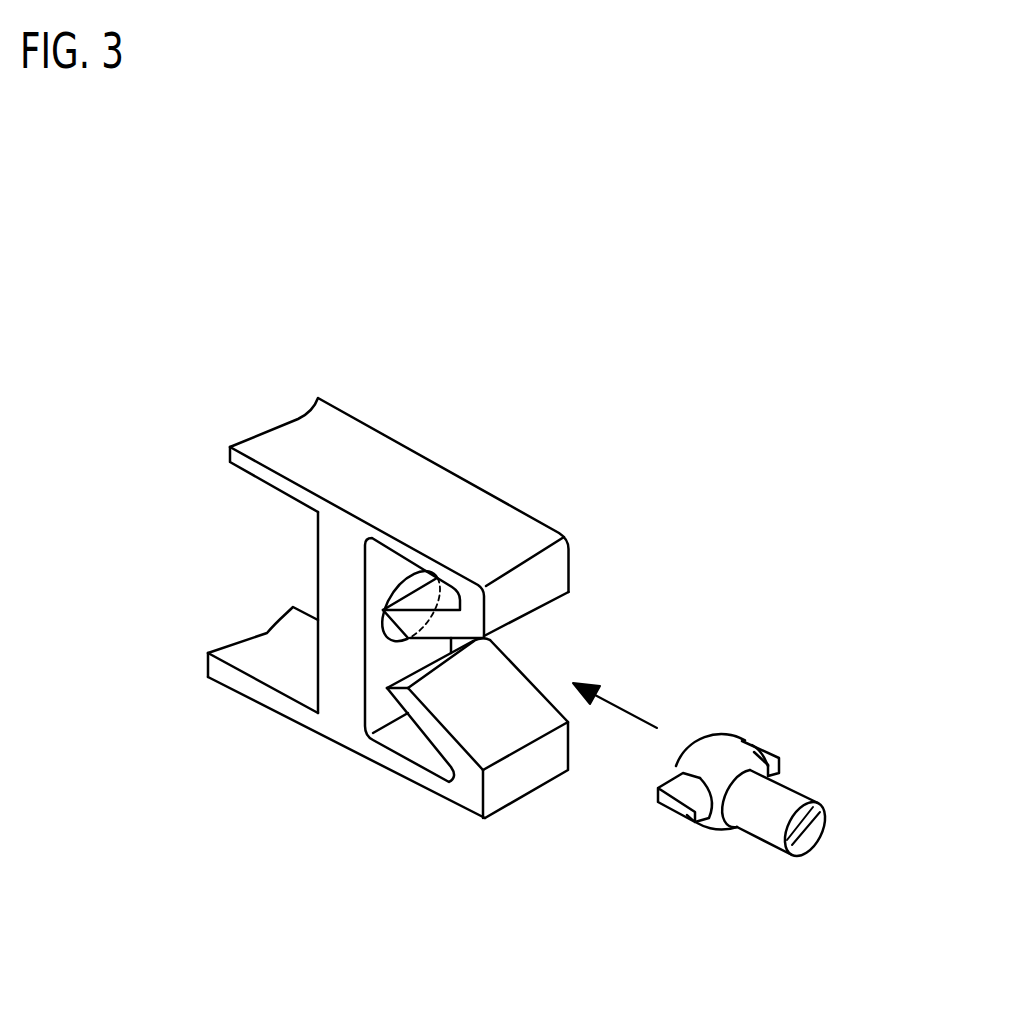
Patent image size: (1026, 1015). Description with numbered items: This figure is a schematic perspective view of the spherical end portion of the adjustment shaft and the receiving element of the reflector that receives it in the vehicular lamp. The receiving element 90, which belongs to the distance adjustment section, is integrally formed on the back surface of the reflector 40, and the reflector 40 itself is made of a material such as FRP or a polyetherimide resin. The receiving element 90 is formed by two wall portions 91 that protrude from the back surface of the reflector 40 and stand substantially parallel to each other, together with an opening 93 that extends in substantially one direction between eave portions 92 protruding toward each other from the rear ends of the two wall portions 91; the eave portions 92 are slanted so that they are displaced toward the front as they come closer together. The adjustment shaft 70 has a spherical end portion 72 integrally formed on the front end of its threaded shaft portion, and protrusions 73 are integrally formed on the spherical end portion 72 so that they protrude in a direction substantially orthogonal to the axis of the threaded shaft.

The reflector 40 is at (335, 433).
The receiving element 90 is at (513, 522).
The wall portions 91 is at (403, 545).
The eave portions 92 is at (510, 678).
The opening 93 is at (433, 648).
The adjustment shaft 70 is at (758, 827).
The spherical end portion 72 is at (703, 748).
The protrusions 73 is at (776, 755).